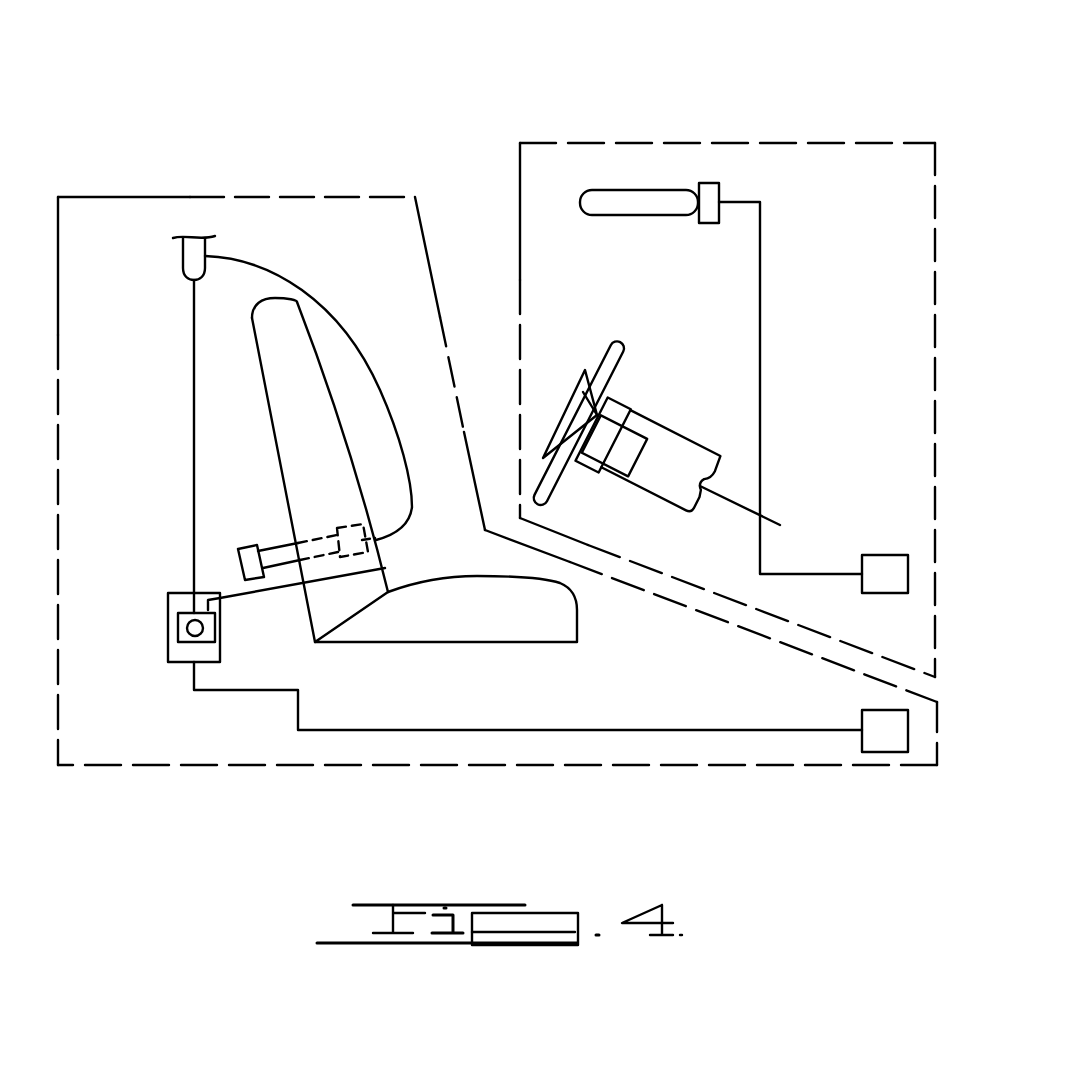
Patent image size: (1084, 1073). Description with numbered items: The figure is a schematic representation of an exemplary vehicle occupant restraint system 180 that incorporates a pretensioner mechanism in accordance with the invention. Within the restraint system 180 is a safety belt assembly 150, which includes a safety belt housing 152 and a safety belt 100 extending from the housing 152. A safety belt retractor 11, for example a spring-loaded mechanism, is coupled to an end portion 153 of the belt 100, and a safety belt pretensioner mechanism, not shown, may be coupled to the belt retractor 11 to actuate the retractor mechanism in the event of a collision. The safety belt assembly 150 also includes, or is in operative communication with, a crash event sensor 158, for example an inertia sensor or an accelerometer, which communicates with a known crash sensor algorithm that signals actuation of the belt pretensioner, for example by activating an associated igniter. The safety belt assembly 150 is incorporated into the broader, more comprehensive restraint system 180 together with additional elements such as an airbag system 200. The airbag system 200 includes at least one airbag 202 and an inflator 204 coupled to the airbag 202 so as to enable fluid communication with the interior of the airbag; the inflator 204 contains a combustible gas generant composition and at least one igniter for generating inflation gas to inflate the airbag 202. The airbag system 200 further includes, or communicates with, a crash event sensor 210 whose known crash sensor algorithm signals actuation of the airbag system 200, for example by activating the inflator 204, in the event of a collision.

The vehicle occupant restraint system 180 is at (331, 118).
The safety belt assembly 150 is at (420, 768).
The airbag system 200 is at (763, 143).
The airbag 202 is at (618, 198).
The inflator 204 is at (716, 196).
The crash event sensor 210 is at (885, 560).
The crash event sensor 158 is at (872, 719).
The safety belt 100 is at (337, 308).
The end portion 153 is at (205, 567).
The safety belt retractor 11 is at (177, 593).
The safety belt housing 152 is at (180, 633).